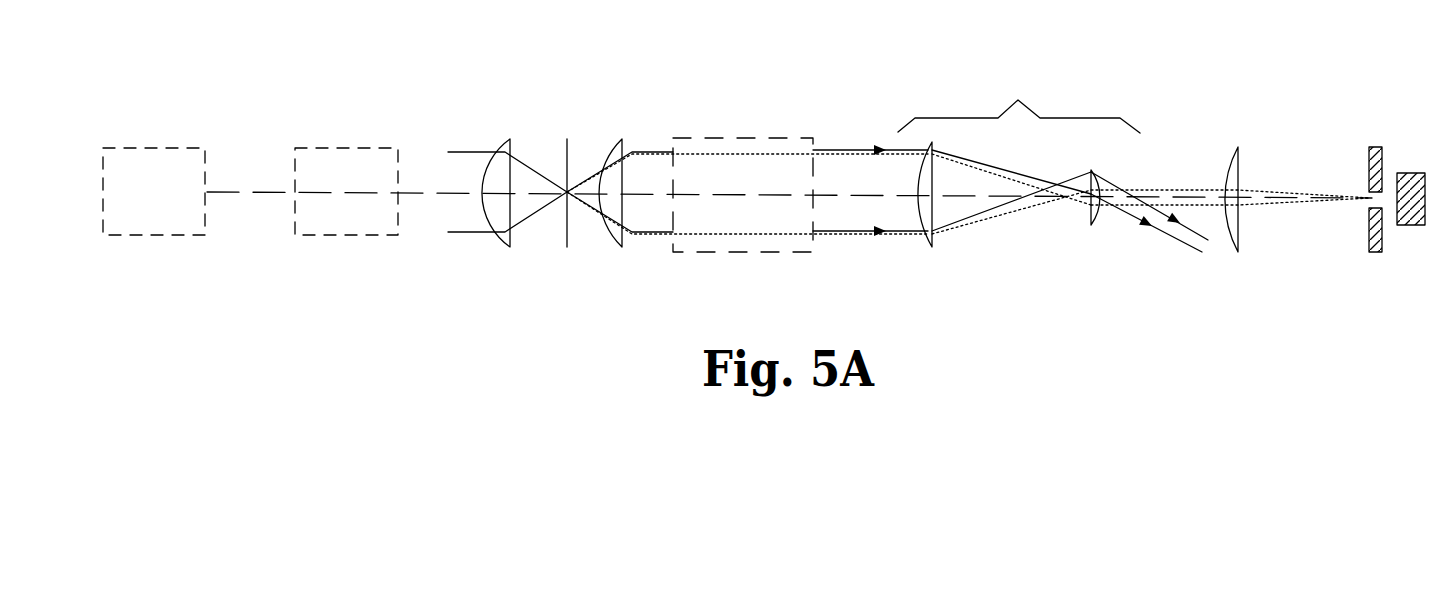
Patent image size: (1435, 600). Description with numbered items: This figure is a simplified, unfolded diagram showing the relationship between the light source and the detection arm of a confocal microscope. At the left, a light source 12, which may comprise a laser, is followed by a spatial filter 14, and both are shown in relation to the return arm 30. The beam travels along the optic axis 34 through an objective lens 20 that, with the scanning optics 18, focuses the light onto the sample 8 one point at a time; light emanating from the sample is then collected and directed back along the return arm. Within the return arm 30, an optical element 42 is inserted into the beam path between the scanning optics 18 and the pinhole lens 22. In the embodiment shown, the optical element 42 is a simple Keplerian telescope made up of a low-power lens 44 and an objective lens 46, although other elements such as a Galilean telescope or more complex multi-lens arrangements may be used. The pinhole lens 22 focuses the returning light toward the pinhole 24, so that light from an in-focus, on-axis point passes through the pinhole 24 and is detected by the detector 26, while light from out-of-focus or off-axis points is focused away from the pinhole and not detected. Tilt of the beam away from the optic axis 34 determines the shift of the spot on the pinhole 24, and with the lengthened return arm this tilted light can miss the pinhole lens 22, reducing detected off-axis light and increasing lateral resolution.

The light source 12 is at (133, 236).
The spatial filter 14 is at (327, 236).
The optic axis 34 is at (463, 192).
The objective lens 20 is at (505, 143).
The sample 8 is at (567, 148).
The scanning optics 18 is at (755, 138).
The return arm 30 is at (880, 102).
The optical element 42 is at (1019, 104).
The low-power lens 44 is at (934, 248).
The objective lens 46 is at (1093, 224).
The pinhole lens 22 is at (1235, 160).
The pinhole 24 is at (1384, 196).
The detector 26 is at (1405, 173).